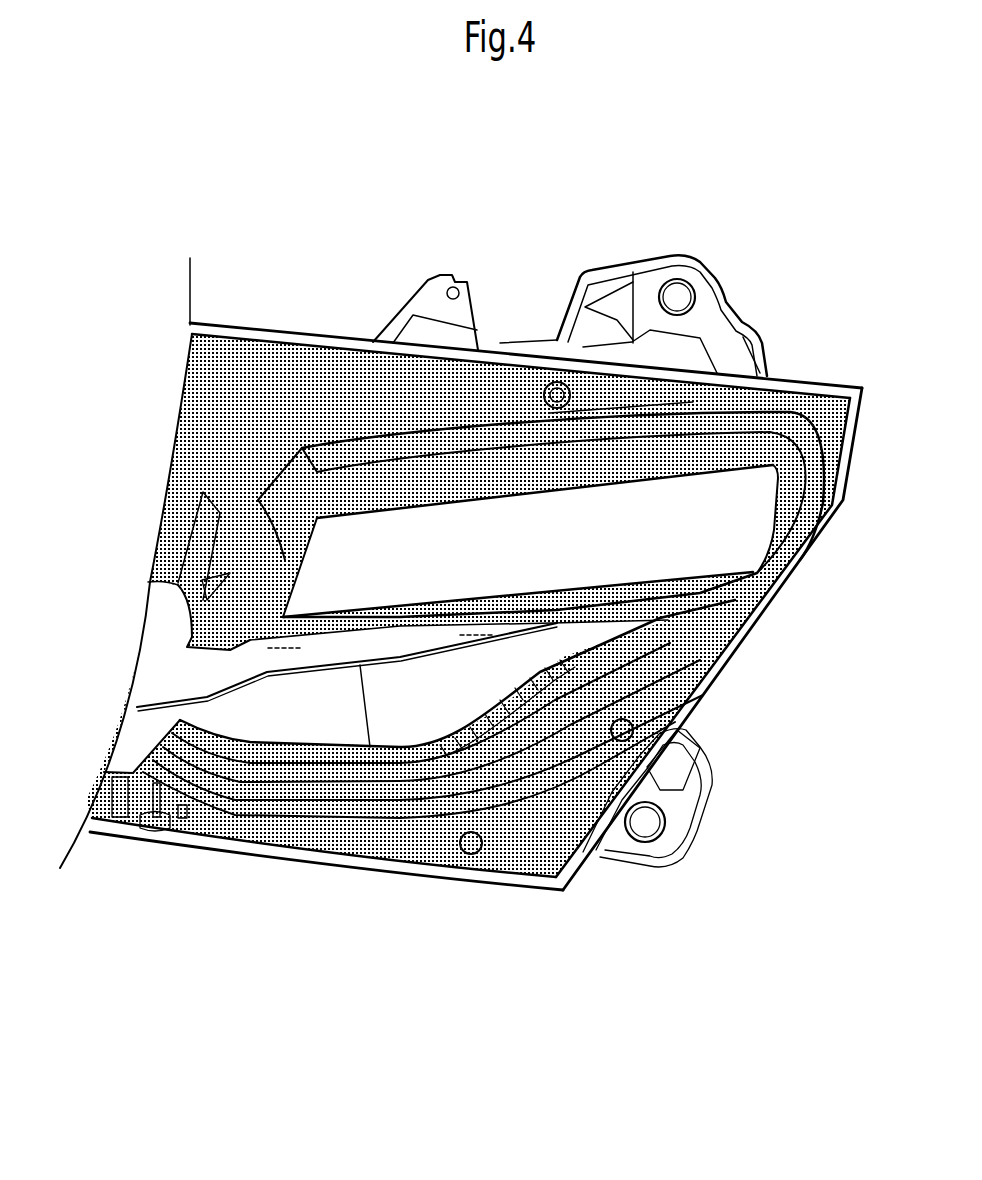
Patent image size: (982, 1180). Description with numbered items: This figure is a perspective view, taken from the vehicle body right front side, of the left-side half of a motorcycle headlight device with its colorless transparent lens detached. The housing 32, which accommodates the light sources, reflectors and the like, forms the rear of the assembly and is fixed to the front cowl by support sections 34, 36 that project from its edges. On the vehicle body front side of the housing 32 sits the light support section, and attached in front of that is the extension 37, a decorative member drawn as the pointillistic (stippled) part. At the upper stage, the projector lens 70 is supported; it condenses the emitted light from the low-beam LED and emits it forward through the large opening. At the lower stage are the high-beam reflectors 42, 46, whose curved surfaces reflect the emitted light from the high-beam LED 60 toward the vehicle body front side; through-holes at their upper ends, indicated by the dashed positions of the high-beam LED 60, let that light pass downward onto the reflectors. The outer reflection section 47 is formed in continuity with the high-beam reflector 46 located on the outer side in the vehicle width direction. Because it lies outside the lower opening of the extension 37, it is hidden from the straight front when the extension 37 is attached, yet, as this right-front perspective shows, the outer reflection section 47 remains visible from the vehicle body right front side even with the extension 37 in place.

The housing 32 is at (295, 326).
The support section 34 is at (682, 273).
The support section 36 is at (470, 295).
The extension 37 is at (522, 884).
The high-beam reflector 42 is at (313, 720).
The high-beam reflector 46 is at (660, 657).
The outer reflection section 47 is at (476, 690).
The high-beam LED 60 is at (283, 650).
The projector lens 70 is at (547, 520).